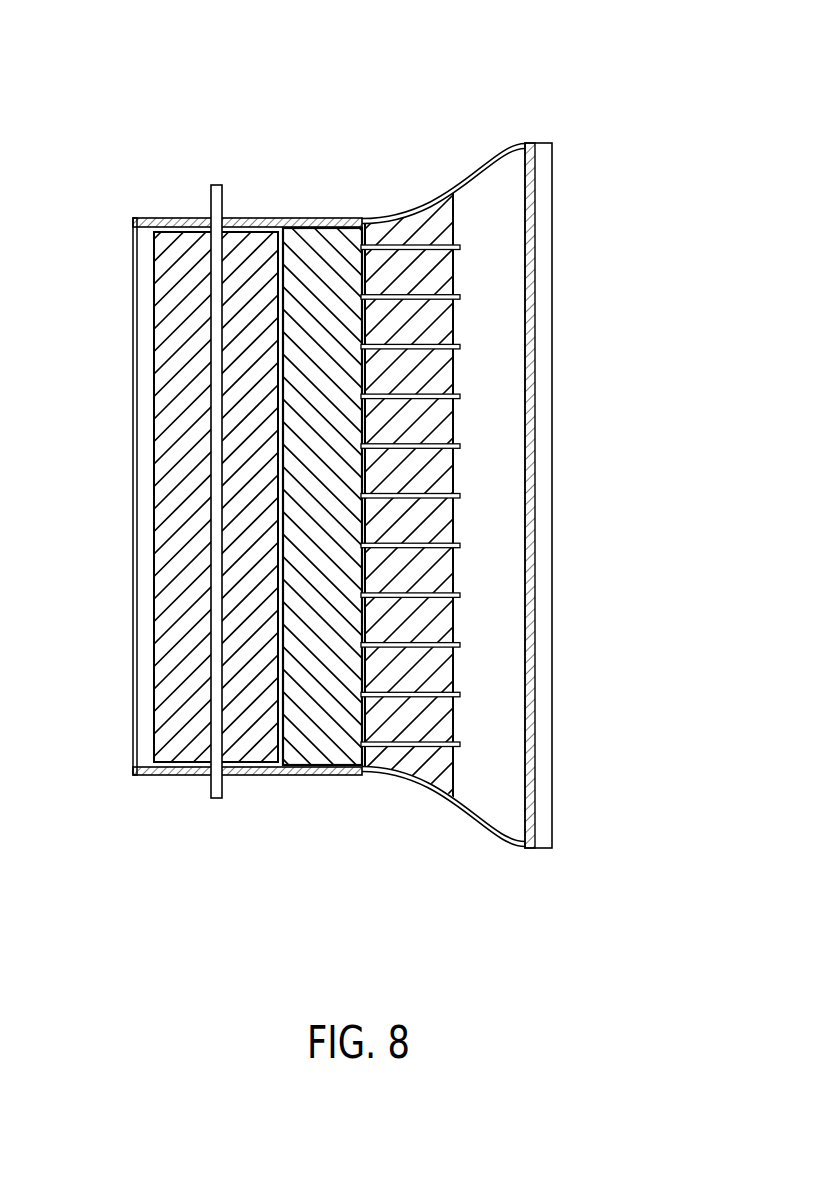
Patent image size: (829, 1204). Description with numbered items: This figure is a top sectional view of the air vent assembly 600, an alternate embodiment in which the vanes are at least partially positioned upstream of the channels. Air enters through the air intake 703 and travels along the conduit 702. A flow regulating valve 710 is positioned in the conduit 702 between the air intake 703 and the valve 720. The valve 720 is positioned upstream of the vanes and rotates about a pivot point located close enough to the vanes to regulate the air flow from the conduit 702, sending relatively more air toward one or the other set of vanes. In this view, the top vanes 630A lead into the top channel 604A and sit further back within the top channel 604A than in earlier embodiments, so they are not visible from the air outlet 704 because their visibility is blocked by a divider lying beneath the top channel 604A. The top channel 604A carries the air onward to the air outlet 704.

The air vent assembly 600 is at (88, 81).
The conduit 702 is at (153, 770).
The air intake 703 is at (133, 398).
The flow regulating valve 710 is at (192, 262).
The valve 720 is at (308, 226).
The top vanes 630A is at (392, 239).
The top channel 604A is at (502, 268).
The air outlet 704 is at (543, 508).